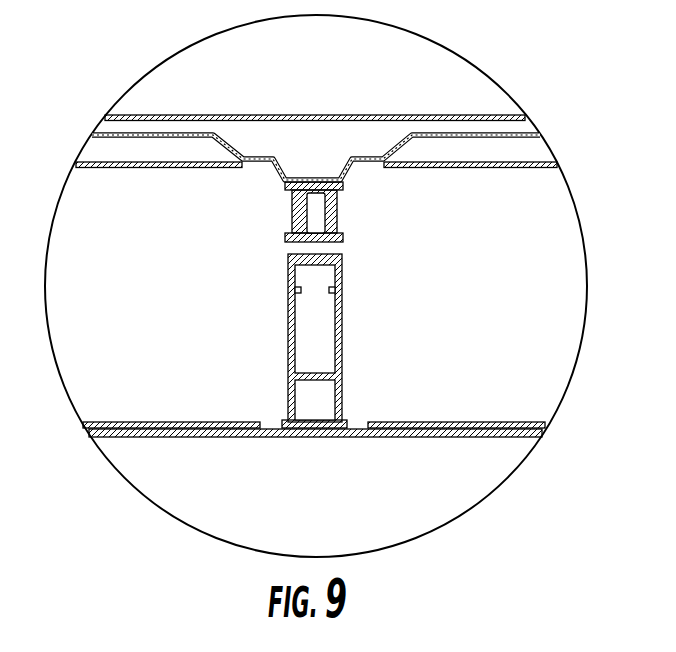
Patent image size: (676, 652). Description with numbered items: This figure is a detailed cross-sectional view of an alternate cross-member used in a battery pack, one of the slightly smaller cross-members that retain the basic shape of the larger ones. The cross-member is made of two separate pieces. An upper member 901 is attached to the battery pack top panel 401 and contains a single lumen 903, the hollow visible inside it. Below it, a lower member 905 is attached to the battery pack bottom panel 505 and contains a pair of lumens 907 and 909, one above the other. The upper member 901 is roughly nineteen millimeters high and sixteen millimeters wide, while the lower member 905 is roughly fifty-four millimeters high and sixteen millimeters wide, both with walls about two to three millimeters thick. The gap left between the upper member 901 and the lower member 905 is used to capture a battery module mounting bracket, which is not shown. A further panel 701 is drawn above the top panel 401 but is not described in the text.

The outer panel 701 is at (146, 113).
The battery pack top panel 401 is at (363, 156).
The upper member 901 is at (311, 230).
The lumen 903 is at (294, 207).
The lower member 905 is at (322, 341).
The lumen 907 is at (296, 327).
The lumen 909 is at (330, 396).
The battery pack bottom panel 505 is at (352, 438).